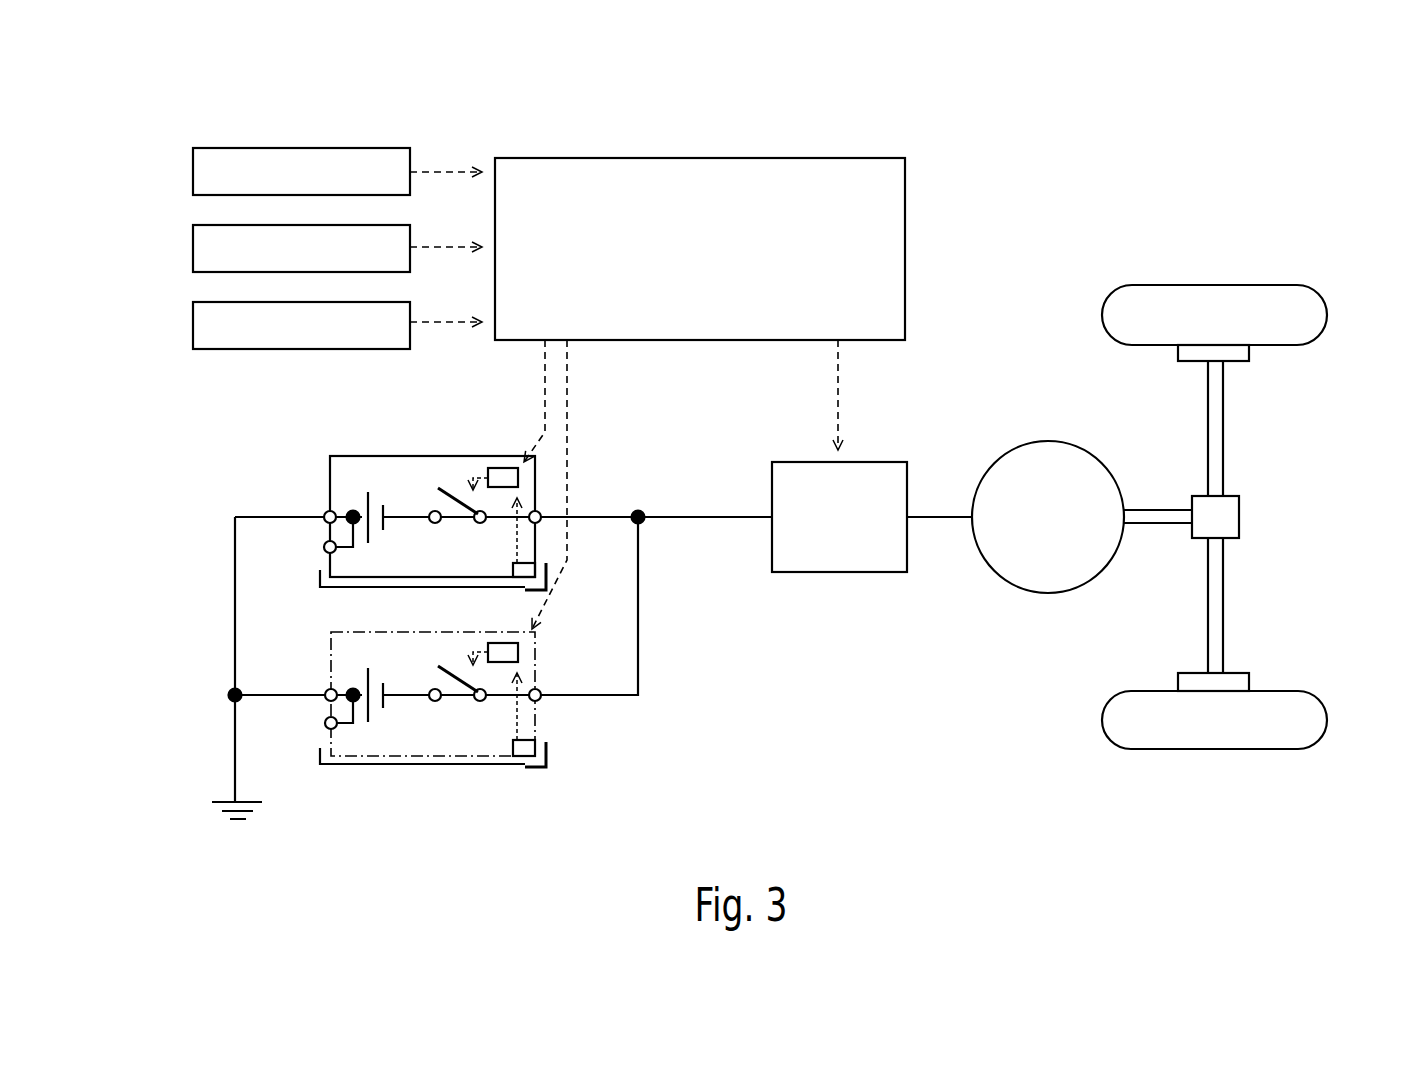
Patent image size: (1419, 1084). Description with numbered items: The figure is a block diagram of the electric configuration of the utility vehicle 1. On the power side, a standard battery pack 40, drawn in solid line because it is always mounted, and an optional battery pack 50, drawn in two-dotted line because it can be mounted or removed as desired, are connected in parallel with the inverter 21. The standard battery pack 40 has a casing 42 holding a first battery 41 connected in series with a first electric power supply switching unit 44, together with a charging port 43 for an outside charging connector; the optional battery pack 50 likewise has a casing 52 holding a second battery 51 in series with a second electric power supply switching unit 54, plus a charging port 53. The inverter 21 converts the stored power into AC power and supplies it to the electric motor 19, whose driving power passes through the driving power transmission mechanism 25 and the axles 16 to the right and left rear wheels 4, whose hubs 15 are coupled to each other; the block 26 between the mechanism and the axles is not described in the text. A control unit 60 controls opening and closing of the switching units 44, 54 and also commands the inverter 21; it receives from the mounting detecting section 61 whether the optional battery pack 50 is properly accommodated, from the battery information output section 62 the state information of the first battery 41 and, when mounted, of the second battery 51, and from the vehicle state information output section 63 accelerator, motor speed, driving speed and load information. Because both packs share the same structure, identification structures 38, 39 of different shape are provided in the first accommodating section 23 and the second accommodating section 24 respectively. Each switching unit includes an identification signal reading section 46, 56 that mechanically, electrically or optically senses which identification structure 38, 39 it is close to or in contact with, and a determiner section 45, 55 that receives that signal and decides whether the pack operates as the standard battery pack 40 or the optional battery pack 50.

The utility vehicle 1 is at (1112, 205).
The rear wheel 4 is at (1307, 318).
The hub 15 is at (1250, 353).
The axle 16 is at (1223, 443).
The electric motor 19 is at (1020, 590).
The inverter 21 is at (838, 572).
The first accommodating section 23 is at (320, 575).
The second accommodating section 24 is at (340, 765).
The driving power transmission mechanism 25 is at (1158, 508).
The differential gear 26 is at (1240, 522).
The identification structure 38 is at (548, 566).
The identification structure 39 is at (548, 745).
The standard battery pack 40 is at (330, 456).
The first battery 41 is at (366, 494).
The casing 42 is at (420, 473).
The charging port 43 is at (325, 545).
The first electric power supply switching unit 44 is at (455, 496).
The determiner section 45 is at (508, 468).
The identification signal reading section 46 is at (513, 568).
The optional battery pack 50 is at (330, 632).
The second battery 51 is at (368, 707).
The casing 52 is at (423, 737).
The charging port 53 is at (325, 730).
The second electric power supply switching unit 54 is at (450, 665).
The determiner section 55 is at (520, 653).
The identification signal reading section 56 is at (513, 745).
The control unit 60 is at (905, 248).
The mounting detecting section 61 is at (193, 328).
The battery information output section 62 is at (193, 253).
The vehicle state information output section 63 is at (193, 178).